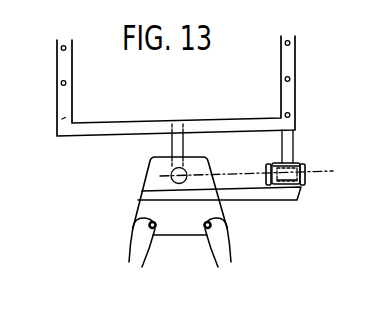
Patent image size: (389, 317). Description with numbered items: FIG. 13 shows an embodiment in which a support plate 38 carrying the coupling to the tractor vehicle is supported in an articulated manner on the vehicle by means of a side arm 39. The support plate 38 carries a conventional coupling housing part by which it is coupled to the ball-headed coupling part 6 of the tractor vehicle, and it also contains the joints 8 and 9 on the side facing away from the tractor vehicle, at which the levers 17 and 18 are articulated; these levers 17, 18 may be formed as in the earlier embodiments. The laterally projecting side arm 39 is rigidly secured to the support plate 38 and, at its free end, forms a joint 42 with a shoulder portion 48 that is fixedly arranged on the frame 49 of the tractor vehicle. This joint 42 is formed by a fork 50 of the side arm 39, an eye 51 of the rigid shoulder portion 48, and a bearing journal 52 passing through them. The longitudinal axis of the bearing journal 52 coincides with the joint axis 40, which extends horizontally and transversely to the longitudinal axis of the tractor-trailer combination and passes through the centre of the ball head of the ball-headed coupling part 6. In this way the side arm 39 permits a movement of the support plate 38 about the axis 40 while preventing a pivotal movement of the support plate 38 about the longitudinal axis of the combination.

The ball-headed coupling part 6 is at (172, 173).
The joint 8 is at (208, 235).
The joint 9 is at (153, 235).
The lever 17 is at (214, 264).
The lever 18 is at (134, 249).
The support plate 38 is at (147, 213).
The side arm 39 is at (241, 198).
The joint axis 40 is at (245, 173).
The joint 42 is at (319, 166).
The shoulder portion 48 is at (281, 145).
The frame 49 is at (283, 62).
The fork 50 is at (301, 185).
The eye 51 is at (293, 164).
The bearing journal 52 is at (304, 178).